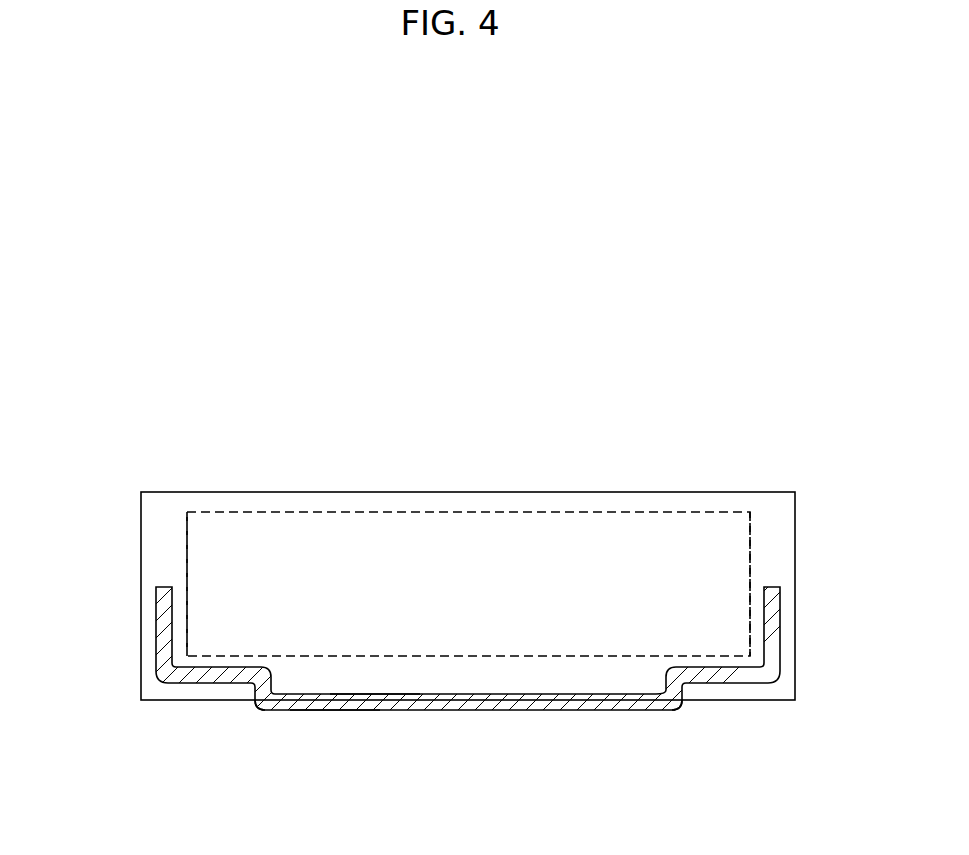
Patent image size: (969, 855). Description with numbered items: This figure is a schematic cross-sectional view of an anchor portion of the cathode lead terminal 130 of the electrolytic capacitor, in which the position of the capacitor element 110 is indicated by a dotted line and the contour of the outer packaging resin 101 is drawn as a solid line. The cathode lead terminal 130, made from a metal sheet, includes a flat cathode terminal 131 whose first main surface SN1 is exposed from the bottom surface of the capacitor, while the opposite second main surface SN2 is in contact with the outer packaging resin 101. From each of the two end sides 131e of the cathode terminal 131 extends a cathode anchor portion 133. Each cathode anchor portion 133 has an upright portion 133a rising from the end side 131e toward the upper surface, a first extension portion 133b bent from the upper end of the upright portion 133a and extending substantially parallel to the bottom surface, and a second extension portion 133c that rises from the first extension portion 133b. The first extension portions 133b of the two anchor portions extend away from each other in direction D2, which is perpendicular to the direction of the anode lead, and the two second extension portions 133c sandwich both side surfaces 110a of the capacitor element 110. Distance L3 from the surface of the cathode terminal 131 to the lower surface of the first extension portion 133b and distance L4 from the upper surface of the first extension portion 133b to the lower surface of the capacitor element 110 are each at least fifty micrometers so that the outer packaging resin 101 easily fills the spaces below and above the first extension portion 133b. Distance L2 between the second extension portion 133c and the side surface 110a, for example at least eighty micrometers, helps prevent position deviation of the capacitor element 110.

The outer packaging resin 101 is at (795, 497).
The capacitor element 110 is at (297, 511).
The side surface of capacitor element 110a is at (183, 524).
The cathode lead terminal 130 is at (530, 741).
The cathode terminal 131 is at (468, 704).
The end side 131e is at (268, 714).
The cathode anchor portion 133 is at (72, 628).
The upright portion 133a is at (256, 691).
The first extension portion 133b is at (198, 684).
The second extension portion 133c is at (156, 625).
The first main surface SN1 is at (337, 712).
The second main surface SN2 is at (371, 696).
The direction perpendicular to direction D1 D2 is at (423, 478).
The distance between second extension portion and side surface L2 is at (765, 587).
The distance from cathode terminal surface to lower surface of first extension porti L3 is at (733, 684).
The distance from upper surface of first extension portion to lower surface of capac L4 is at (773, 657).